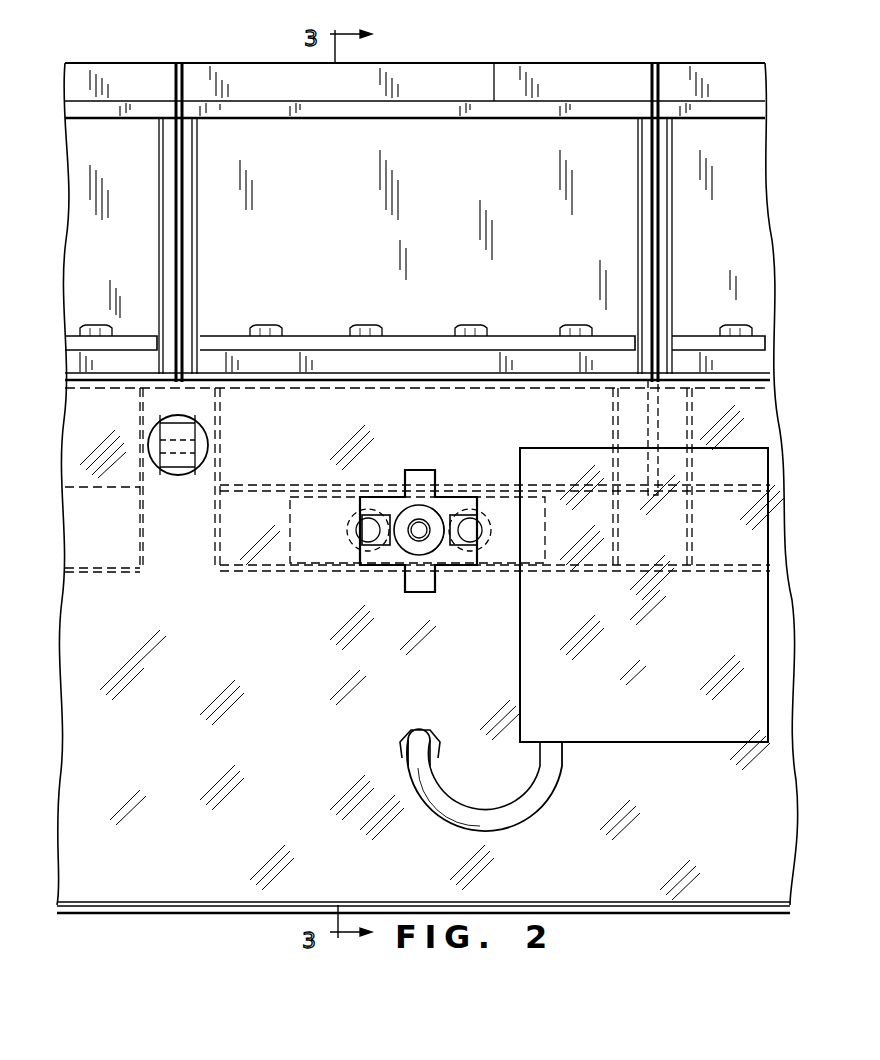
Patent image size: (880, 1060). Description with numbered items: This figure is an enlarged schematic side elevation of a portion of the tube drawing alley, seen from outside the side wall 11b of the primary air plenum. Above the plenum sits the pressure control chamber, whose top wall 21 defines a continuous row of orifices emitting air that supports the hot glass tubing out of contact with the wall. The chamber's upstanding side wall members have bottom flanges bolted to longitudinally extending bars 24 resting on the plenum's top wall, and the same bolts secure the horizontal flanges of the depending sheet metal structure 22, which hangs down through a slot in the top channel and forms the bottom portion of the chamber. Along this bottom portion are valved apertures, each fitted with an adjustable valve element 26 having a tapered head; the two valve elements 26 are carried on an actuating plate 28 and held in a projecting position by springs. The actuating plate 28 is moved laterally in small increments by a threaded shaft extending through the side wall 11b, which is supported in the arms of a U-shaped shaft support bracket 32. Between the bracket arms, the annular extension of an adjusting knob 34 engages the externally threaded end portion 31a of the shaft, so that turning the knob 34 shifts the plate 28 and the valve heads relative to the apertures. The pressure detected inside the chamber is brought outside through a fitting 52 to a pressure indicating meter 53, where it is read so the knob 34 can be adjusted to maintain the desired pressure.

The top wall 21 is at (533, 63).
The longitudinally extending bars 24 is at (513, 366).
The depending sheet metal structure 22 is at (143, 548).
The adjustable valve element 26 is at (343, 520).
The actuating plate 28 is at (290, 560).
The externally threaded end portion 31a is at (413, 536).
The shaft support bracket 32 is at (458, 557).
The adjusting knob 34 is at (418, 585).
The side wall 11b is at (162, 711).
The fitting 52 is at (410, 742).
The pressure indicating meter 53 is at (705, 728).